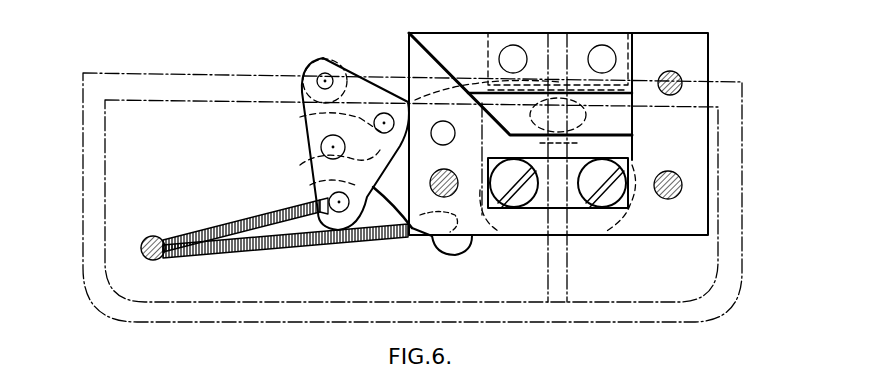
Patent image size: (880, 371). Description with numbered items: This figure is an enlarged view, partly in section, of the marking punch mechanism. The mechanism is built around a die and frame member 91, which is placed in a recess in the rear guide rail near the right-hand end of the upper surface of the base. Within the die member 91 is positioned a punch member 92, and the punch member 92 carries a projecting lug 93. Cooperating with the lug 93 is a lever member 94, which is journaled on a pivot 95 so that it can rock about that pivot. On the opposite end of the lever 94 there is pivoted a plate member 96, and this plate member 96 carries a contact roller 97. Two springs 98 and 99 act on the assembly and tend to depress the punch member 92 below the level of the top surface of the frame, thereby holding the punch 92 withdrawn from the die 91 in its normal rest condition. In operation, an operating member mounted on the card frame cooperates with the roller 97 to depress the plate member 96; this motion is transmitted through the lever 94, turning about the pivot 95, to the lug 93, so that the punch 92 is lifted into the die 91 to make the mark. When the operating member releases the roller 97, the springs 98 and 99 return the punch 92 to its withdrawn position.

The die and frame member 91 is at (583, 40).
The punch member 92 is at (575, 142).
The projecting lug 93 is at (575, 102).
The lever member 94 is at (397, 193).
The pivot 95 is at (453, 192).
The plate member 96 is at (300, 110).
The contact roller 97 is at (322, 70).
The spring 98 is at (273, 247).
The spring 99 is at (243, 222).